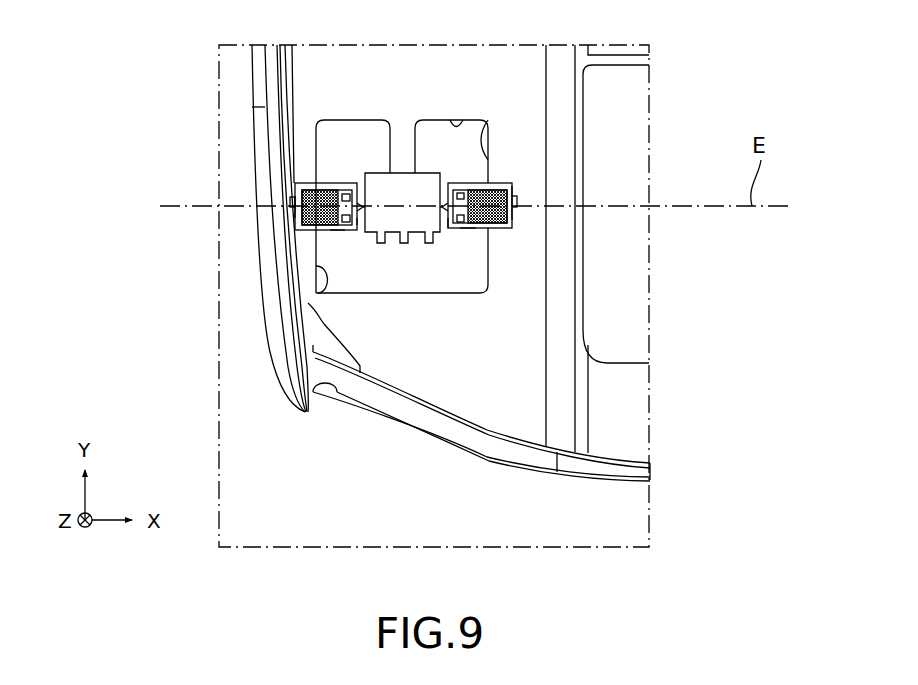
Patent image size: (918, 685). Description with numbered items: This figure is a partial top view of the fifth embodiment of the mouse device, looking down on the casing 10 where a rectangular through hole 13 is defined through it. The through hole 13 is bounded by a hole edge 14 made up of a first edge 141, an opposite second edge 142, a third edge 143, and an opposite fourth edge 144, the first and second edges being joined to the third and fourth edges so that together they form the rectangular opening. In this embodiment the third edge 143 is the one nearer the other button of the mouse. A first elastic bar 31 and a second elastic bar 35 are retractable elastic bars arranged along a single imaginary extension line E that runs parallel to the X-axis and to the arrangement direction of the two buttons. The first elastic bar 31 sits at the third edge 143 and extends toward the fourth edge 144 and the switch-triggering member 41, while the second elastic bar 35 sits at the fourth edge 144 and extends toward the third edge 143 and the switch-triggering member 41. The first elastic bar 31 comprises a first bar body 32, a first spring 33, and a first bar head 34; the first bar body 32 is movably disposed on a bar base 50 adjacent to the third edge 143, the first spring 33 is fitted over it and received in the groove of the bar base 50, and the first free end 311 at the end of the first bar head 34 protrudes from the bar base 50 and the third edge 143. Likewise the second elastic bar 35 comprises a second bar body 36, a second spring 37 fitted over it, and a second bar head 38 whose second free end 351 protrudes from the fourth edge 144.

The casing 10 is at (256, 135).
The through hole 13 is at (328, 120).
The hole edge 14 is at (457, 111).
The first edge 141 is at (303, 328).
The second edge 142 is at (460, 119).
The third edge 143 is at (489, 120).
The fourth edge 144 is at (305, 305).
The first elastic bar 31 is at (500, 186).
The first free end 311 is at (446, 228).
The first bar body 32 is at (514, 206).
The first spring 33 is at (513, 218).
The first bar head 34 is at (468, 228).
The second elastic bar 35 is at (312, 181).
The second free end 351 is at (360, 222).
The second bar body 36 is at (294, 204).
The second spring 37 is at (294, 212).
The second bar head 38 is at (335, 229).
The switch-triggering member 41 is at (403, 180).
The bar base 50 is at (516, 200).